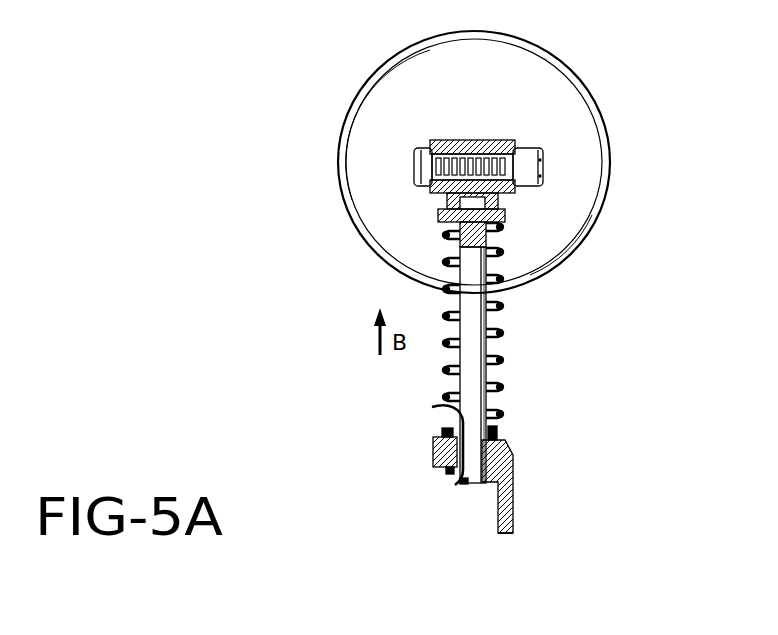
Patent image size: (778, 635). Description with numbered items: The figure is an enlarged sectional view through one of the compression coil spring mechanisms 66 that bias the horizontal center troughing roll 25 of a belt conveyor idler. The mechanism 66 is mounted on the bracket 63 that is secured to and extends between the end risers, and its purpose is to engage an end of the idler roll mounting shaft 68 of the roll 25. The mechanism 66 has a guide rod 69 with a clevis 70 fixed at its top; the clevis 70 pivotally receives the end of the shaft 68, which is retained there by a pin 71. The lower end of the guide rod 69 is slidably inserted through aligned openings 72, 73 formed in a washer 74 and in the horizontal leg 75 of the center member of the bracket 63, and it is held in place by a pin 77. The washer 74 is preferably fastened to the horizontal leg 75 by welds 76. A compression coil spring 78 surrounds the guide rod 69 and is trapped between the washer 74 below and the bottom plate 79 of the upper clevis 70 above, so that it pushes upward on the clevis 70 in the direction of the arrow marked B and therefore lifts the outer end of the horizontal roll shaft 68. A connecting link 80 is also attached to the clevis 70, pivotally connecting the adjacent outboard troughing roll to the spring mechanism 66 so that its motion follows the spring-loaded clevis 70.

The center troughing roll 25 is at (431, 112).
The bracket 63 is at (490, 545).
The compression coil spring mechanism 66 is at (530, 372).
The idler roll mounting shaft 68 is at (463, 139).
The guide rod 69 is at (473, 331).
The clevis 70 is at (500, 202).
The pin 71 is at (425, 188).
The opening 72 is at (434, 407).
The opening 73 is at (467, 485).
The washer 74 is at (503, 440).
The horizontal leg 75 is at (447, 464).
The weld 76 is at (437, 447).
The pin 77 is at (445, 480).
The compression coil spring 78 is at (497, 361).
The bottom plate 79 is at (508, 214).
The connecting link 80 is at (507, 139).